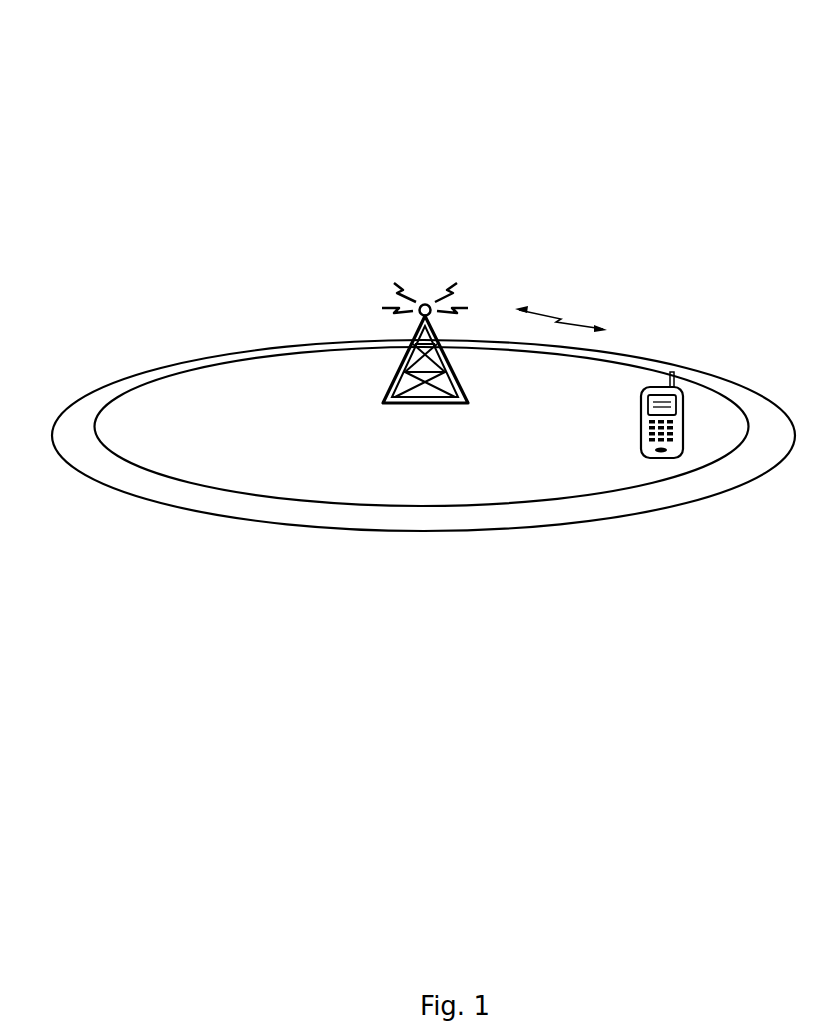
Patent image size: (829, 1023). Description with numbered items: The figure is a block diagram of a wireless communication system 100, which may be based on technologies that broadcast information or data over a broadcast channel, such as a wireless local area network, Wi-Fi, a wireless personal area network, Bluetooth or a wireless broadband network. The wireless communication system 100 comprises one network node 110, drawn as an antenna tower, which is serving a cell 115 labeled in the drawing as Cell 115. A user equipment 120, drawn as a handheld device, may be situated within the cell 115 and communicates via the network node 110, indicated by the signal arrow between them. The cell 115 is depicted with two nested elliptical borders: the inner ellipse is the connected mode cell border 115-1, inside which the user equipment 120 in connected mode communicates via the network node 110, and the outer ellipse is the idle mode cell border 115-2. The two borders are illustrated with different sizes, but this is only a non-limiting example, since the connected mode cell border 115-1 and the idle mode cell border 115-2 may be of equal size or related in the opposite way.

The wireless communication system 100 is at (700, 100).
The network node 110 is at (425, 364).
The cell 115 is at (423, 484).
The connected mode cell border 115-1 is at (167, 477).
The idle mode cell border 115-2 is at (265, 529).
The user equipment 120 is at (636, 415).